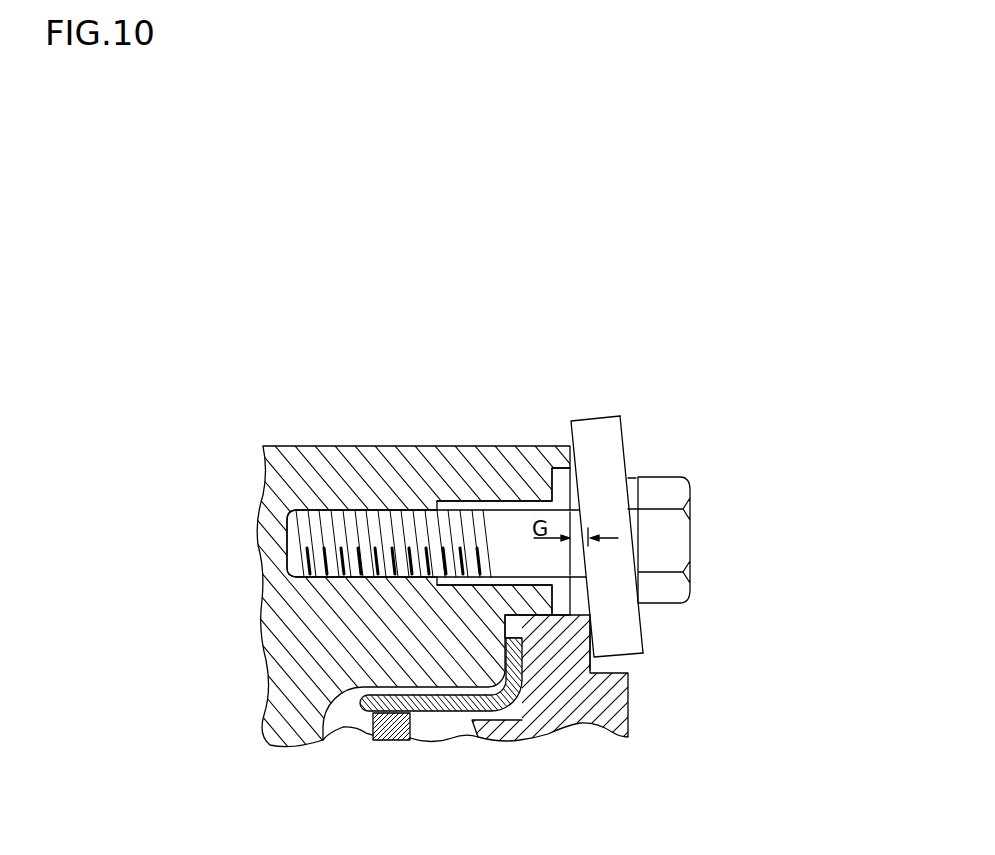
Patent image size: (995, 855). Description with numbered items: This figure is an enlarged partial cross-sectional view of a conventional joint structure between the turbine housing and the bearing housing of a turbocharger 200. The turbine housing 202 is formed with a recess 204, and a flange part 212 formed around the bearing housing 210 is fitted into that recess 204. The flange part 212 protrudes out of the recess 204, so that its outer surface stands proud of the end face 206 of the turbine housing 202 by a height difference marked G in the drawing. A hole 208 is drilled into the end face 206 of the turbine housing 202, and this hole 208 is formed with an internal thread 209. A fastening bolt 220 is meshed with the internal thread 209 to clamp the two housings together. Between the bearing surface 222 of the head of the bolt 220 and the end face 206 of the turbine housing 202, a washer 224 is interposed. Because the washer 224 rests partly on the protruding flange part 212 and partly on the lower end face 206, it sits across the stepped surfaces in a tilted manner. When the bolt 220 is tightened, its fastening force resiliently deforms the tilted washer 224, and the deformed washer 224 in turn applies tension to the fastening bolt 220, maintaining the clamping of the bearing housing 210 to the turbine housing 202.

The turbocharger 200 is at (733, 417).
The turbine housing 202 is at (303, 442).
The recess 204 is at (547, 680).
The end face 206 is at (592, 457).
The hole 208 is at (480, 507).
The internal thread 209 is at (396, 510).
The bearing housing 210 is at (643, 720).
The flange part 212 is at (585, 641).
The bolt 220 is at (692, 505).
The bearing surface 222 is at (633, 488).
The washer 224 is at (627, 448).